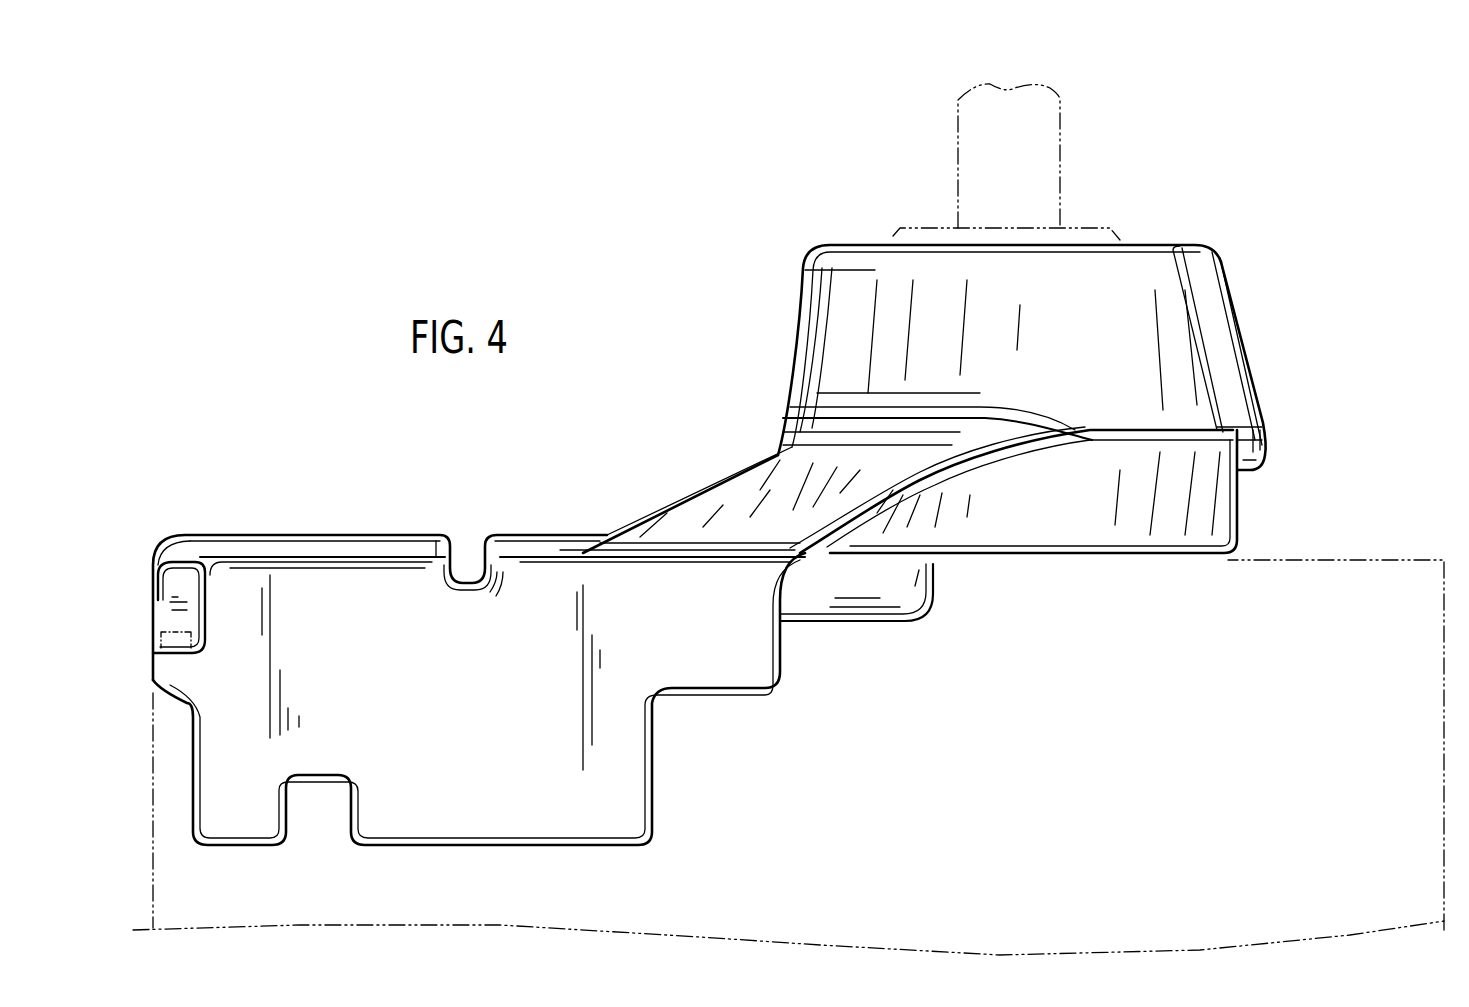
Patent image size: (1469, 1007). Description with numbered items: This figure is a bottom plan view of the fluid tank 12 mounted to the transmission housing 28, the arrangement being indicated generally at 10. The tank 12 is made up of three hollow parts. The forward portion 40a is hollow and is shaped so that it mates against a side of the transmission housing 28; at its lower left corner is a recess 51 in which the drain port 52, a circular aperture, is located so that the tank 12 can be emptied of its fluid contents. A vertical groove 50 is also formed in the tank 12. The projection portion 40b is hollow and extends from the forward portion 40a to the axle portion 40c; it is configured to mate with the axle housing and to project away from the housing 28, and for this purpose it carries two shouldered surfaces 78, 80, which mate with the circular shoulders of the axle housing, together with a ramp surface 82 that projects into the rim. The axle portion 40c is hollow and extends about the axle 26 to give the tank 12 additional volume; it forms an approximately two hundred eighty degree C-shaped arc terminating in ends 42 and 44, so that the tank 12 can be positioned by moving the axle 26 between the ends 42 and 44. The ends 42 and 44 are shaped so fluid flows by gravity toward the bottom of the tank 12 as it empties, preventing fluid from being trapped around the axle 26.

The seal assembly 10 is at (330, 235).
The fluid tank 12 is at (843, 225).
The axle 26 is at (1062, 148).
The transmission housing 28 is at (850, 946).
The forward portion 40a is at (322, 535).
The projection portion 40b is at (727, 468).
The axle portion 40c is at (800, 285).
The end 42 is at (1250, 312).
The end 44 is at (1155, 247).
The vertical groove 50 is at (470, 558).
The recess 51 is at (192, 582).
The drain port 52 is at (153, 642).
The shouldered surface 78 is at (735, 700).
The shouldered surface 80 is at (877, 623).
The ramp surface 82 is at (663, 510).